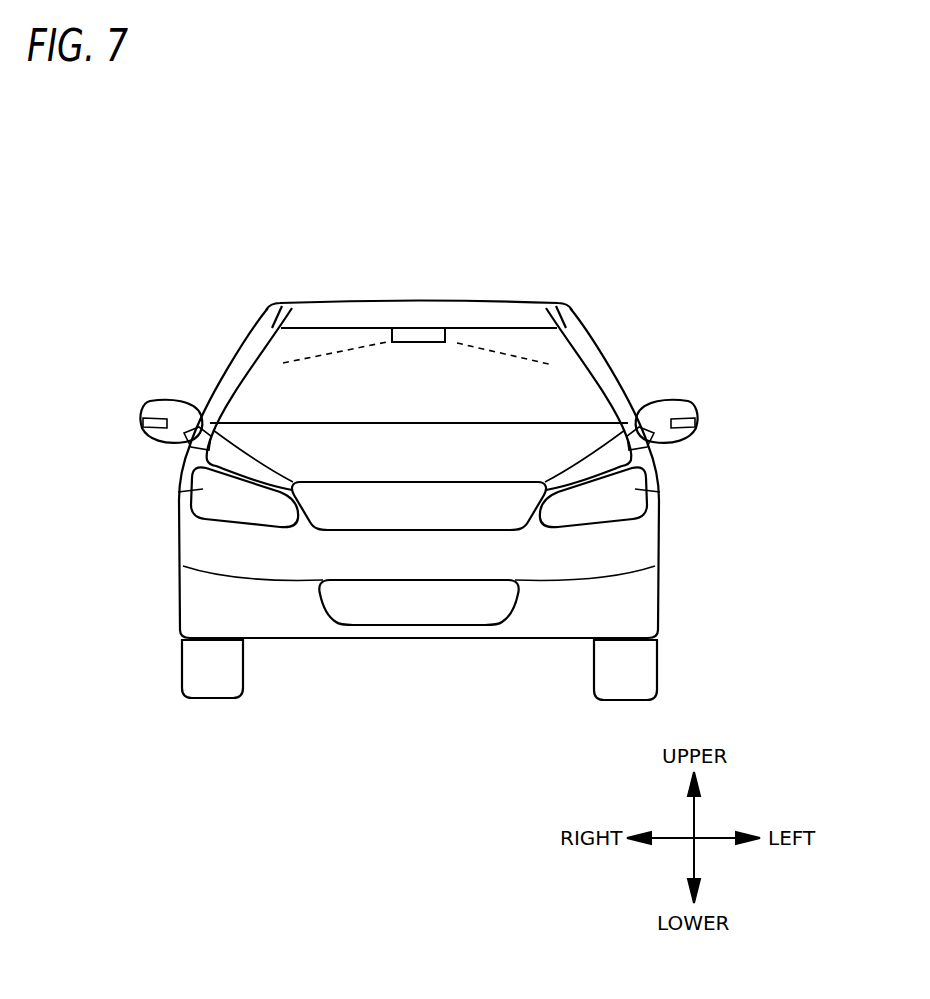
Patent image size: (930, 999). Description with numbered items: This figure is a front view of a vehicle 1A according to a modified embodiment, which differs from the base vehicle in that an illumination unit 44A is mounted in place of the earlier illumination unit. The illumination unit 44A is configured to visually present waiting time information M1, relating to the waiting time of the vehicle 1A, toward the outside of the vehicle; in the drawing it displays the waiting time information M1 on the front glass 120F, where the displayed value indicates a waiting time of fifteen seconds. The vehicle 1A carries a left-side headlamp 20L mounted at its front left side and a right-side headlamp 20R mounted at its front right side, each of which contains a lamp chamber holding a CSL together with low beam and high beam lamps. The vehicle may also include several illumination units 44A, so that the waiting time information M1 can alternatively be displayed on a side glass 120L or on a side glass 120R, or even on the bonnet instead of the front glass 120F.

The vehicle 1A is at (225, 282).
The illumination unit 44A is at (415, 327).
The waiting time information M1 is at (450, 355).
The side glass 120R is at (228, 379).
The side glass 120L is at (617, 390).
The front glass 120F is at (573, 350).
The right-side headlamp 20R is at (203, 492).
The left-side headlamp 20L is at (637, 495).